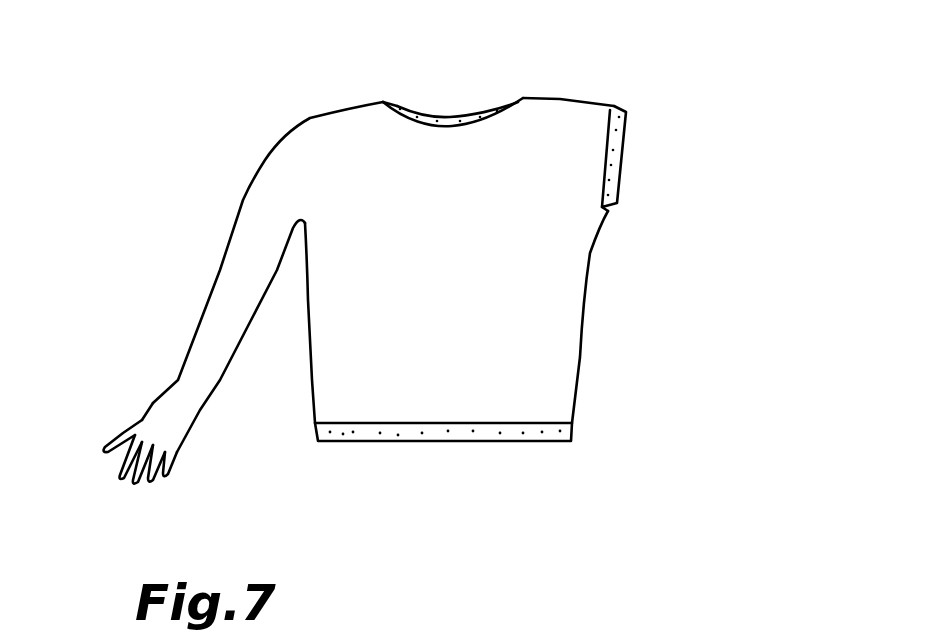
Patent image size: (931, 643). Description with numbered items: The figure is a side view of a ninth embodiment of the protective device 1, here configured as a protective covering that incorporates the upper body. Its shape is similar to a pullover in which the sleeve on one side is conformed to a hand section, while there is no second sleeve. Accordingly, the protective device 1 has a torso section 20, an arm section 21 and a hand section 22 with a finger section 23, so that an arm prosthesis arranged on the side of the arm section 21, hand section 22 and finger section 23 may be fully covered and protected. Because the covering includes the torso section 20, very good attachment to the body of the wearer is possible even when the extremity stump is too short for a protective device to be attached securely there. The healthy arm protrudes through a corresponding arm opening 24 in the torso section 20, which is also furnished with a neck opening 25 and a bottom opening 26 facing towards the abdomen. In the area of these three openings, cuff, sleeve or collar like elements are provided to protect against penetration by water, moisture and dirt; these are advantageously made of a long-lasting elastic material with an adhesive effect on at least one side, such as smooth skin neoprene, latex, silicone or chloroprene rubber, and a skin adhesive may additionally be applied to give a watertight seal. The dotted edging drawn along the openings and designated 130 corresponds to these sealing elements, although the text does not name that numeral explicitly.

The protective device 1 is at (228, 58).
The torso section 20 is at (568, 120).
The arm section 21 is at (240, 243).
The hand section 22 is at (140, 420).
The finger section 23 is at (120, 460).
The arm opening 24 is at (610, 160).
The neck opening 25 is at (443, 123).
The bottom opening 26 is at (557, 440).
The stitched edging 130 is at (393, 102).